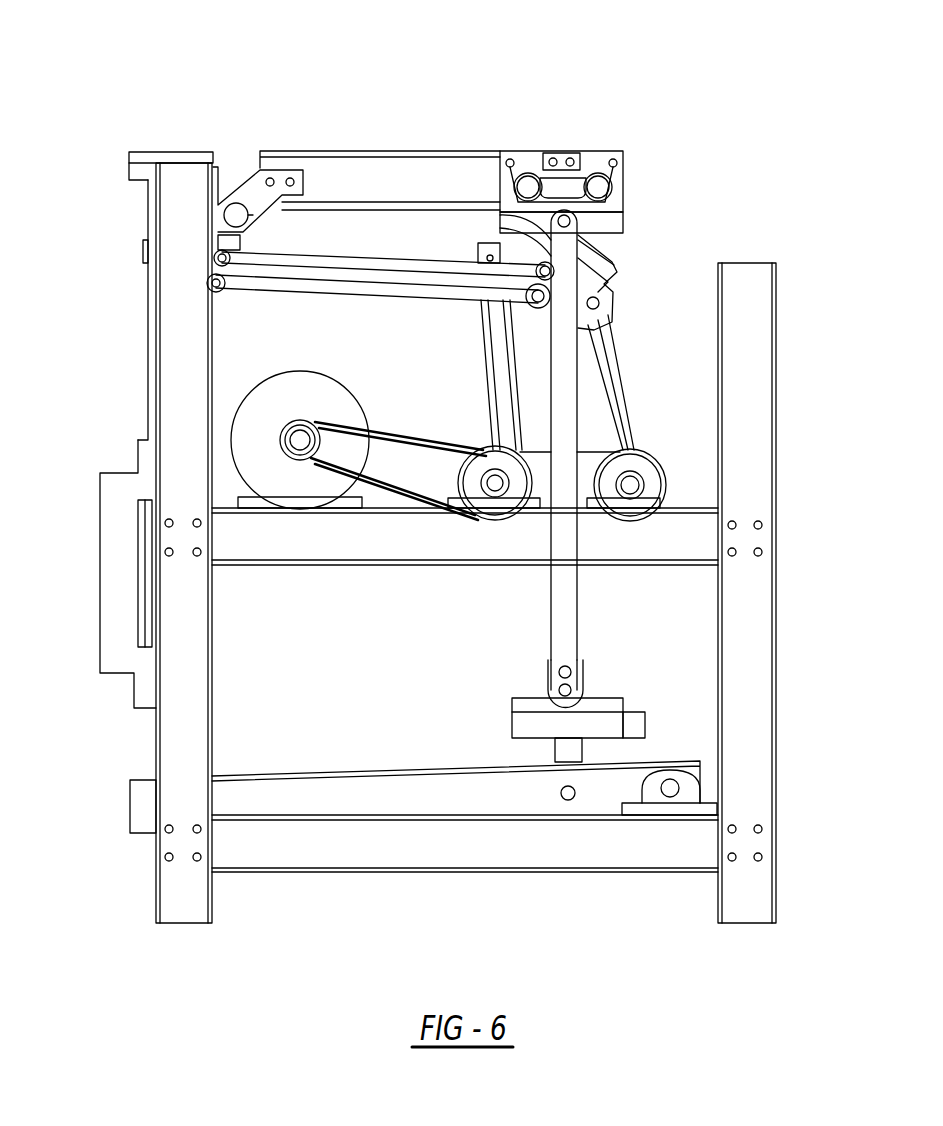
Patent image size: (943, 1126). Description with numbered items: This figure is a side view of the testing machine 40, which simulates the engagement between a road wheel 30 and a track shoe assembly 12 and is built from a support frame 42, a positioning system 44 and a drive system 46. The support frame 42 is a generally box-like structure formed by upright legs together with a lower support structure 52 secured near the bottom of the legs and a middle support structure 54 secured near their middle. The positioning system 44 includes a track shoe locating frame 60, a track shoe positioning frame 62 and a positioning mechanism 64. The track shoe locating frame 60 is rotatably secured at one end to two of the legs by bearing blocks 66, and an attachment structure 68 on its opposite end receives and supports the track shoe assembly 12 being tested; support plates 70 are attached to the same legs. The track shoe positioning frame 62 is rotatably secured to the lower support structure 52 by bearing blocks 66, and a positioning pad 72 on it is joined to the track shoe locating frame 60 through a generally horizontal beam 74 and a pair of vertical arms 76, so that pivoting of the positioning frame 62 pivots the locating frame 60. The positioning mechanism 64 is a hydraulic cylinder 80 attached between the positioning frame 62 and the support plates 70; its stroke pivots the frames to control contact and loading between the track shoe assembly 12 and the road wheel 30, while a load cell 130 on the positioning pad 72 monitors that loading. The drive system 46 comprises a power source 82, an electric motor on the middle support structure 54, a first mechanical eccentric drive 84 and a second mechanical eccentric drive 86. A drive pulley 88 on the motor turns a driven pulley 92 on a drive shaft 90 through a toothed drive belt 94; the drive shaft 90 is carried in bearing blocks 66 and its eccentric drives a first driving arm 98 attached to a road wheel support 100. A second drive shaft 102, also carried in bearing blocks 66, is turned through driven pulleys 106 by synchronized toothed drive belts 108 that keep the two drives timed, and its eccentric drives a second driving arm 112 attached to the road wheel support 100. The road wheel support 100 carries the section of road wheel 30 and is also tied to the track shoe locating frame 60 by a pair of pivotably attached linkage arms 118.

The testing machine 40 is at (518, 82).
The positioning system 44 is at (357, 122).
The drive system 46 is at (461, 624).
The support frame 42 is at (184, 731).
The support plate 70 is at (180, 151).
The middle support structure 54 is at (245, 548).
The lower support structure 52 is at (405, 852).
The track shoe positioning frame 62 is at (415, 780).
The positioning mechanism 64 is at (106, 611).
The hydraulic cylinder 80 is at (152, 546).
The track shoe locating frame 60 is at (392, 166).
The attachment structure 68 is at (600, 160).
The track shoe assembly 12 is at (585, 187).
The vertical arm 76 is at (570, 596).
The road wheel 30 is at (603, 252).
The road wheel support 100 is at (590, 286).
The linkage arm 118 is at (335, 263).
The first driving arm 98 is at (490, 305).
The second driving arm 112 is at (605, 340).
The synchronized toothed drive belt 108 is at (596, 448).
The drive pulley 88 is at (235, 420).
The power source 82 is at (310, 408).
The toothed drive belt 94 is at (385, 490).
The first mechanical eccentric drive 84 is at (481, 424).
The drive shaft 90 is at (493, 500).
The driven pulley 92 is at (490, 482).
The second mechanical eccentric drive 86 is at (671, 483).
The driven pulley 106 is at (654, 484).
The drive shaft 102 is at (633, 490).
The horizontal beam 74 is at (584, 675).
The positioning pad 72 is at (605, 720).
The load cell 130 is at (630, 723).
The bearing block 66 is at (222, 210).